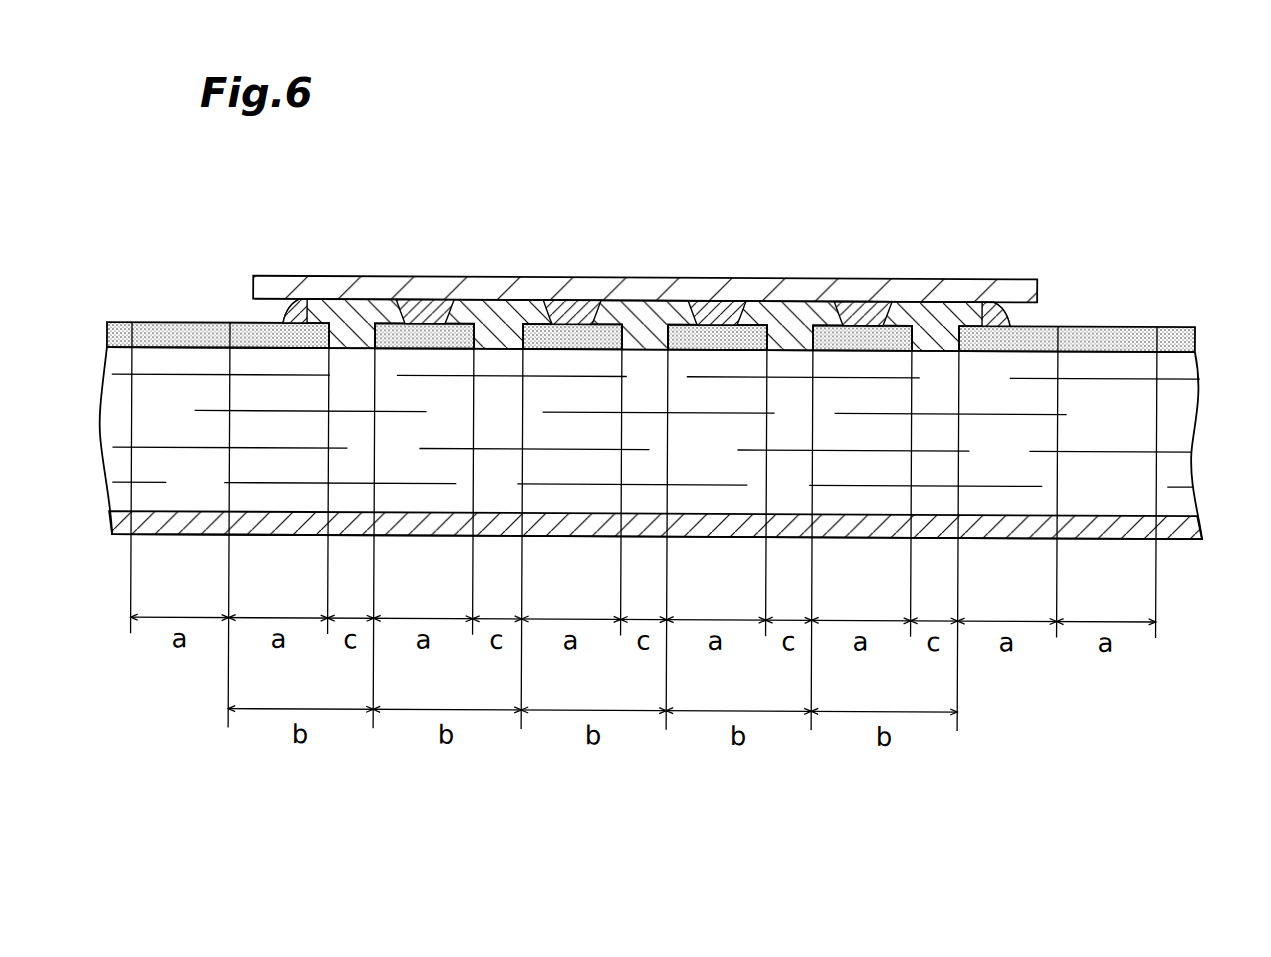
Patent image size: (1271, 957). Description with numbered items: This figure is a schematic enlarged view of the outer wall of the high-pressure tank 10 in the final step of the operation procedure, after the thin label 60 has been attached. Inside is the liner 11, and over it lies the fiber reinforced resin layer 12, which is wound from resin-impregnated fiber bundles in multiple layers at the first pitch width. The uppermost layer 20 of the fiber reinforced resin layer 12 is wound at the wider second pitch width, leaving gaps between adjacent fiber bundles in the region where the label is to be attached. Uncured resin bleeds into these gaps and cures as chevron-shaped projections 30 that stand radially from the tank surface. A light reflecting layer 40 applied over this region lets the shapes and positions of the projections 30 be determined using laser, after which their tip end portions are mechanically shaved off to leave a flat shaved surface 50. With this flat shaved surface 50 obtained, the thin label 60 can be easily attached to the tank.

The high-pressure tank 10 is at (1152, 153).
The liner 11 is at (573, 520).
The fiber reinforced resin layer 12 is at (1180, 410).
The uppermost layer of fiber reinforced resin layer 20 is at (1102, 338).
The projection of cured resin 30 is at (790, 300).
The light reflecting layer 40 is at (721, 300).
The flat shaved surface 50 is at (496, 300).
The thin label 60 is at (1010, 276).